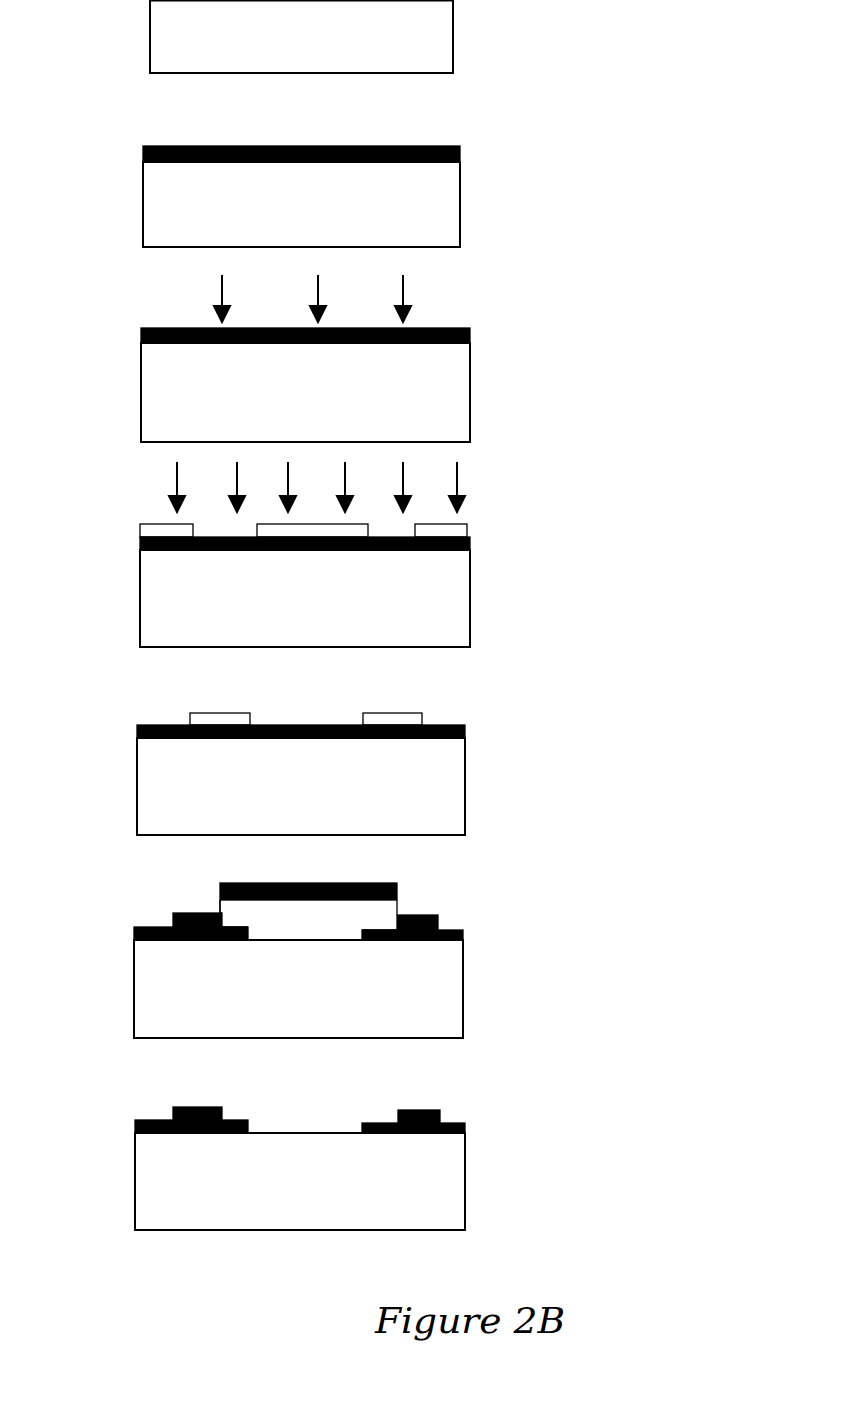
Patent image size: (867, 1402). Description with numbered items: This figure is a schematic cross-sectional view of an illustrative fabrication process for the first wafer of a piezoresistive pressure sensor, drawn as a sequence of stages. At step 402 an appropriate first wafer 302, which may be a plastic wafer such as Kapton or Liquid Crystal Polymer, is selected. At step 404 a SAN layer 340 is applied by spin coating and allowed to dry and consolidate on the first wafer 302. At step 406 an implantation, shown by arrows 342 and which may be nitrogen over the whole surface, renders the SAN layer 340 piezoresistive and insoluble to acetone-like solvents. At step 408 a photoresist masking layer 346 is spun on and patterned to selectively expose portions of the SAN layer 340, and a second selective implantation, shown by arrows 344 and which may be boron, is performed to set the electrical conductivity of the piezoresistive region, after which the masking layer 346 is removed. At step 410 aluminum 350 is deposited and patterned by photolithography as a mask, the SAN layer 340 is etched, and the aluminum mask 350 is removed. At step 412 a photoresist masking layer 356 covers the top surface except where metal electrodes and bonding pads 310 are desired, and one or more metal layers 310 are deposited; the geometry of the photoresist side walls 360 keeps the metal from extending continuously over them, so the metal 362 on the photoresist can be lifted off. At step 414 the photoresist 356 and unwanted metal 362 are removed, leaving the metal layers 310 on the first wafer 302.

The first wafer 302 is at (160, 42).
The metal electrodes and/or bonding pads 310 is at (134, 930).
The SAN layer 340 is at (460, 155).
The arrows (first implantation) 342 is at (404, 287).
The arrows (second implantation) 344 is at (458, 475).
The masking layer 346 is at (156, 531).
The aluminum mask 350 is at (208, 719).
The photoresist masking layer 356 is at (352, 883).
The photoresist side walls 360 is at (218, 906).
The unwanted metal 362 is at (339, 915).
The step (wafer selection) 402 is at (657, 30).
The step (SAN spin coating) 404 is at (652, 210).
The step (first implantation) 406 is at (663, 384).
The step (masking and second implantation) 408 is at (665, 582).
The step (SAN patterning and etching) 410 is at (663, 787).
The step (metal deposition) 412 is at (662, 992).
The step (lift-off) 414 is at (660, 1177).